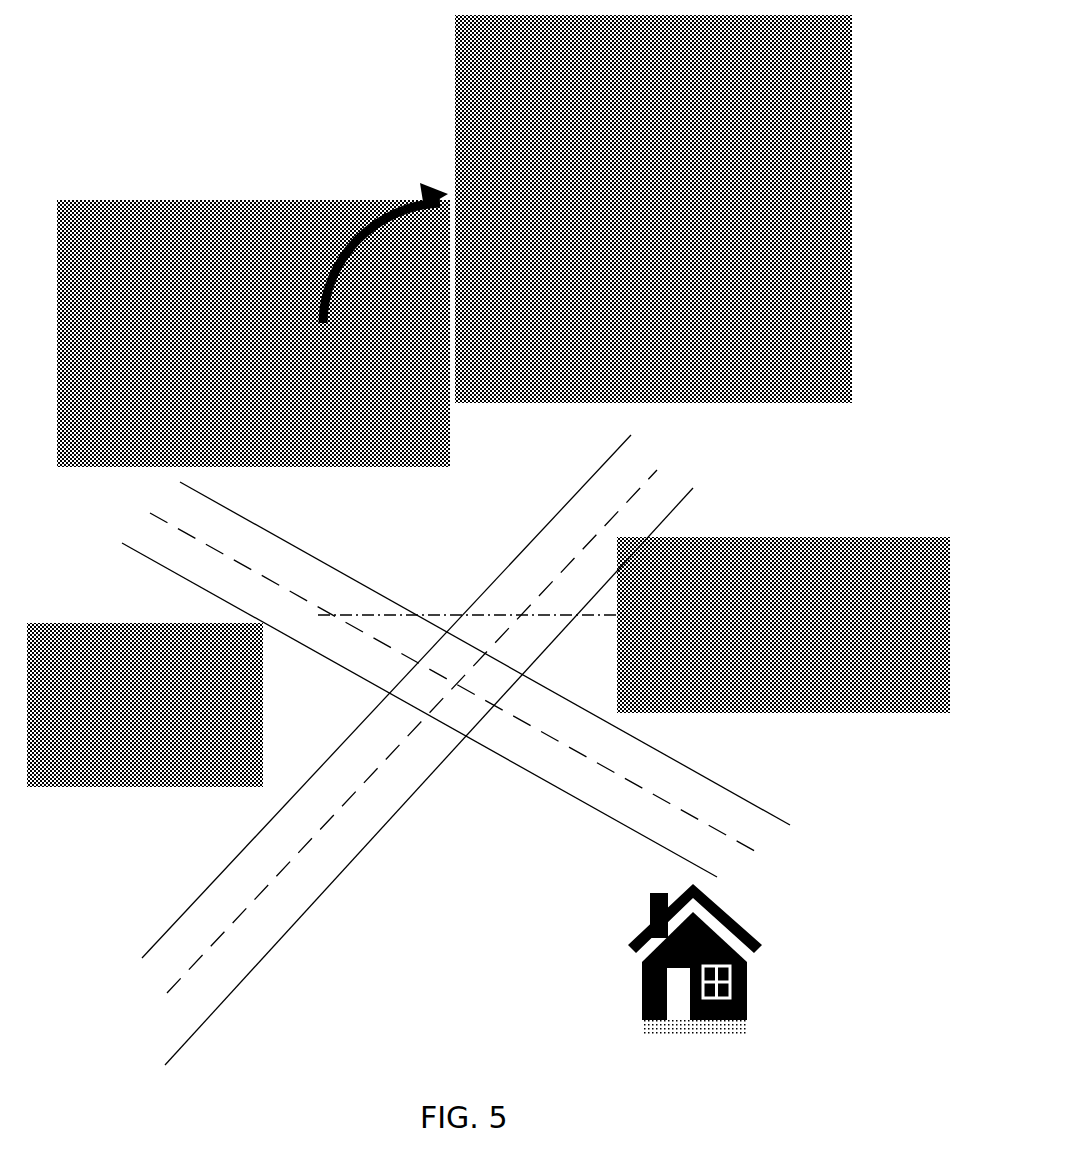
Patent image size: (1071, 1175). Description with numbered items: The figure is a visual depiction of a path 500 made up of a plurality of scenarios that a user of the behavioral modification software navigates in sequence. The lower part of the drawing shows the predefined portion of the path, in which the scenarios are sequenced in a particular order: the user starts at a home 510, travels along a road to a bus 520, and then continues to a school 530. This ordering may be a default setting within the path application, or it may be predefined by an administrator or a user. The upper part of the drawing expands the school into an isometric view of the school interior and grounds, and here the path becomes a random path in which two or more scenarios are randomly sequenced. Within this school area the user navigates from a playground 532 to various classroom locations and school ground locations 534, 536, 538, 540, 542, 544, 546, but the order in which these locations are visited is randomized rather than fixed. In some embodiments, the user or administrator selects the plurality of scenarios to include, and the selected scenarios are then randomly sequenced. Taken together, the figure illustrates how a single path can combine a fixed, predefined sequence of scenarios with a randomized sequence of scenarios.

The scenario of generating an isometric school interior from a school image 500 is at (218, 123).
The home 510 is at (661, 961).
The bus 520 is at (717, 928).
The school 530 is at (318, 615).
The playground 532 is at (527, 334).
The classroom location 534 is at (636, 241).
The classroom location 536 is at (505, 195).
The classroom location 538 is at (496, 72).
The classroom location 540 is at (640, 97).
The classroom location 542 is at (790, 72).
The classroom location 544 is at (792, 195).
The school ground location 546 is at (732, 331).